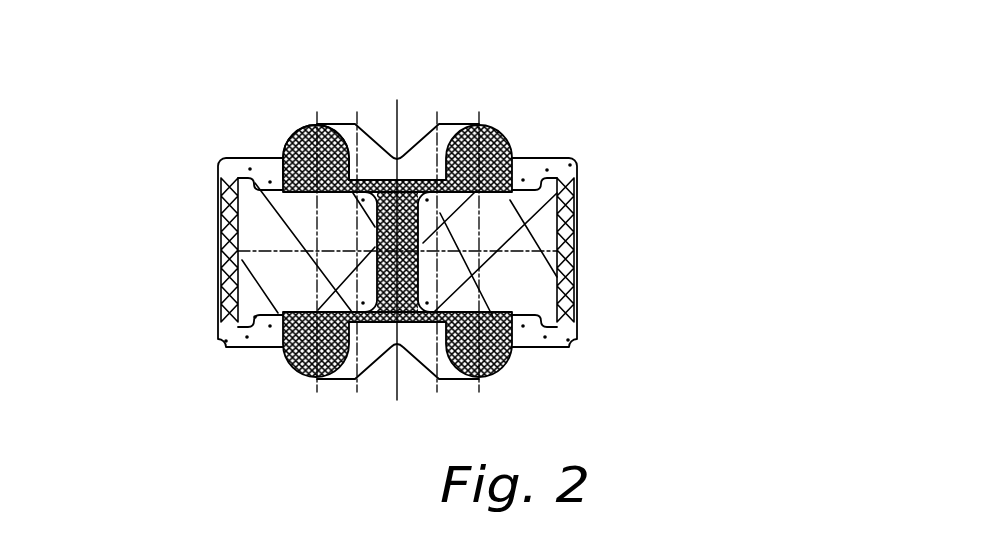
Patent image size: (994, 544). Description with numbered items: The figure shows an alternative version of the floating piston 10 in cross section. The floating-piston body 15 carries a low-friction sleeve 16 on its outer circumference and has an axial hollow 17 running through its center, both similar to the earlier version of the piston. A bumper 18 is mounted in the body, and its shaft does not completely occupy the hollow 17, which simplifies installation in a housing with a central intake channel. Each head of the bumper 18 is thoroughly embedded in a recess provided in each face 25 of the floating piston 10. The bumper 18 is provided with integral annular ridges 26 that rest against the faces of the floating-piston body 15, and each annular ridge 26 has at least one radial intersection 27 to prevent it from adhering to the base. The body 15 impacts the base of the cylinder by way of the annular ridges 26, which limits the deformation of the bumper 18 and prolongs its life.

The floating piston 10 is at (600, 130).
The floating-piston body 15 is at (518, 267).
The low-friction sleeve 16 is at (575, 228).
The axial hollow 17 is at (503, 153).
The bumper 18 is at (422, 100).
The face 25 is at (293, 193).
The annular ridge 26 is at (293, 152).
The radial intersection 27 is at (388, 368).